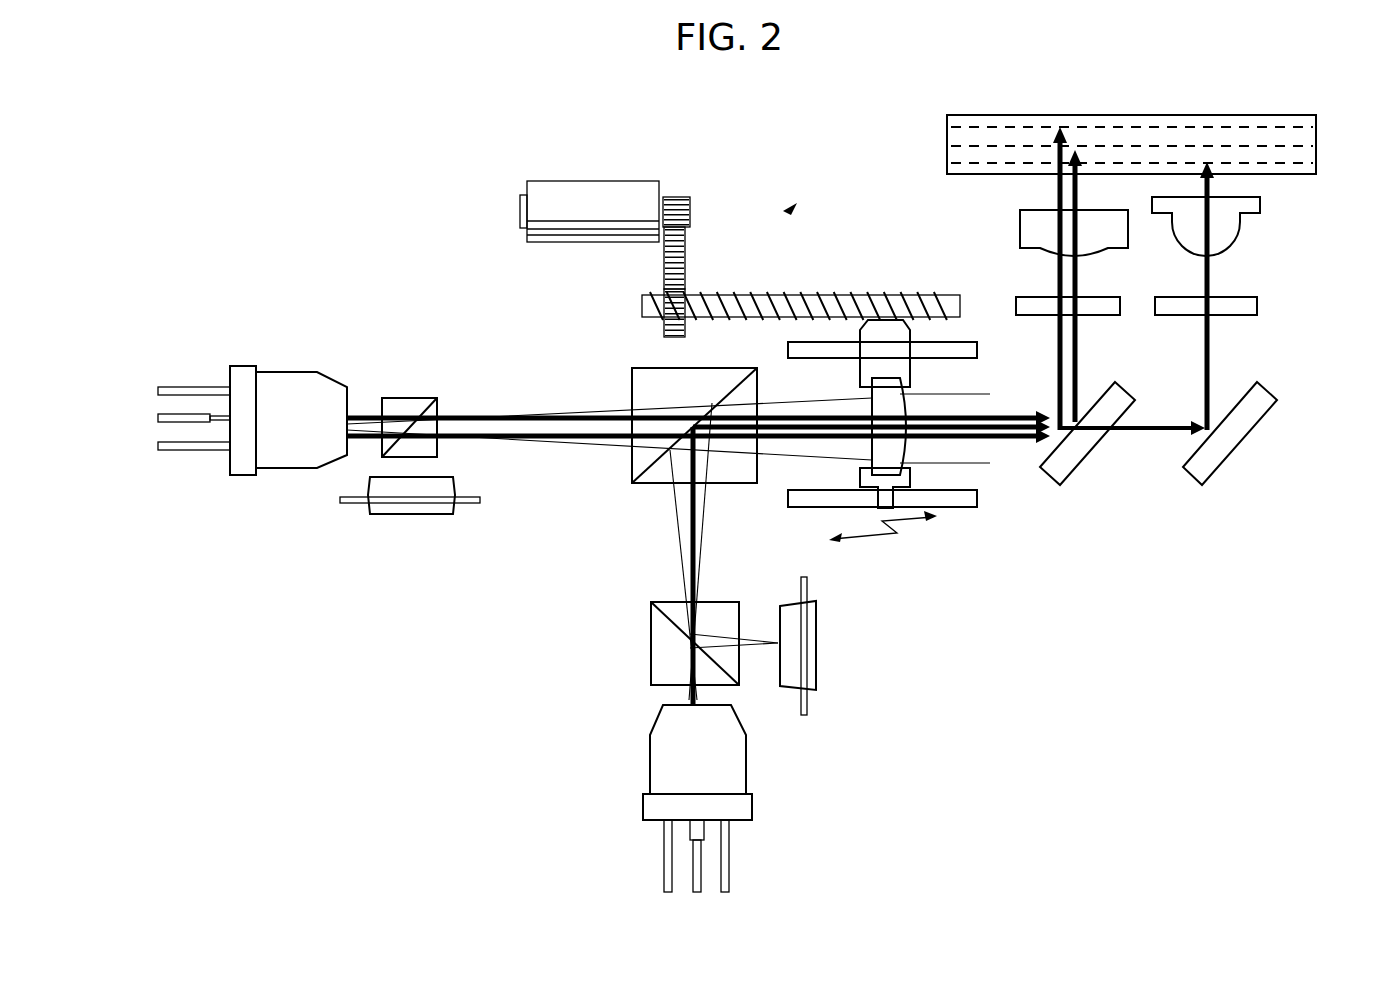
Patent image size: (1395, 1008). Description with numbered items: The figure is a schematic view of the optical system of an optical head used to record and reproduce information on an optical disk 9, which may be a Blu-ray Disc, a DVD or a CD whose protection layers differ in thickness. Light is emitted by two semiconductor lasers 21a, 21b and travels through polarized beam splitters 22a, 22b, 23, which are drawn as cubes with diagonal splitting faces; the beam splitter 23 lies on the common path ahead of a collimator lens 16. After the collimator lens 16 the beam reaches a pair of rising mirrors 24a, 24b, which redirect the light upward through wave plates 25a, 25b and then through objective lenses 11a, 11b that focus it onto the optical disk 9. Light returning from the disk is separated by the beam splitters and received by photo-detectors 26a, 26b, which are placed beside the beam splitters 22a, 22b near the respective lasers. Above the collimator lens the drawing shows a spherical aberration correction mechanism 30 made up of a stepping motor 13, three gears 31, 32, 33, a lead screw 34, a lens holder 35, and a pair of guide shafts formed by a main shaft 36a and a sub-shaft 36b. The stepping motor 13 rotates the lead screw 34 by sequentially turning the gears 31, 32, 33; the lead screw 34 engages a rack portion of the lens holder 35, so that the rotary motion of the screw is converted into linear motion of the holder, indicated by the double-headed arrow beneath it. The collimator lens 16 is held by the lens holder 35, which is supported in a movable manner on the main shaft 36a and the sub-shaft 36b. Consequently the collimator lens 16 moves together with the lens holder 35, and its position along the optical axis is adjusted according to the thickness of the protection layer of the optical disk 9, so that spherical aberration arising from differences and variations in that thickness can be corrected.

The optical disk 9 is at (1312, 136).
The objective lens 11a is at (1025, 222).
The objective lens 11b is at (1222, 228).
The stepping motor 13 is at (605, 181).
The collimator lens 16 is at (897, 411).
The semiconductor laser 21a is at (240, 366).
The semiconductor laser 21b is at (647, 770).
The polarized beam splitter 22a is at (410, 397).
The polarized beam splitter 22b is at (647, 649).
The polarized beam splitter 23 is at (635, 368).
The rising mirror 24a is at (1072, 462).
The rising mirror 24b is at (1212, 462).
The wave plate 25a is at (1105, 316).
The wave plate 25b is at (1243, 316).
The photo-detector 26a is at (418, 516).
The photo-detector 26b is at (820, 650).
The spherical aberration correction mechanism 30 is at (788, 208).
The gear 31 is at (690, 212).
The gear 32 is at (685, 257).
The gear 33 is at (685, 295).
The lead screw 34 is at (808, 292).
The lens holder 35 is at (906, 330).
The main shaft 36a is at (790, 349).
The sub-shaft 36b is at (972, 498).